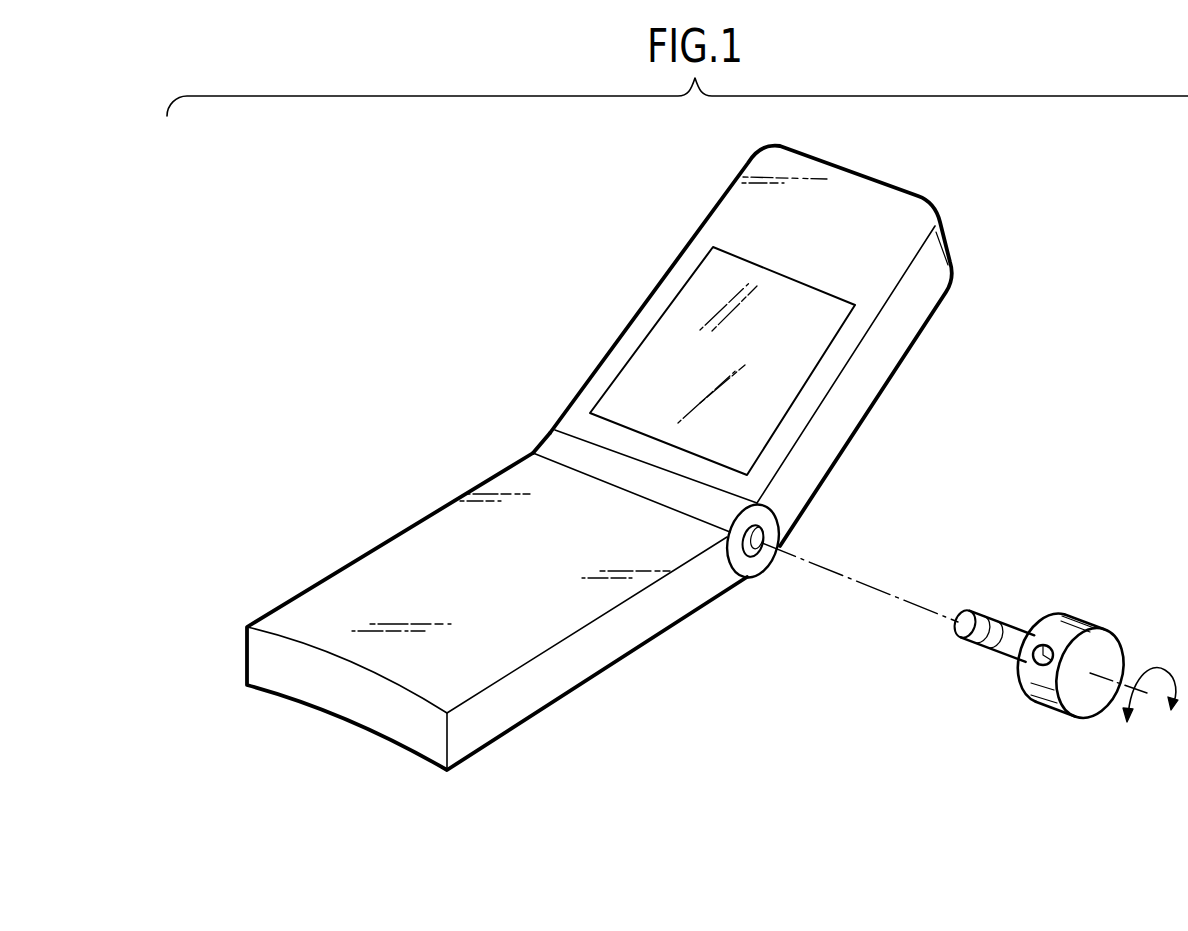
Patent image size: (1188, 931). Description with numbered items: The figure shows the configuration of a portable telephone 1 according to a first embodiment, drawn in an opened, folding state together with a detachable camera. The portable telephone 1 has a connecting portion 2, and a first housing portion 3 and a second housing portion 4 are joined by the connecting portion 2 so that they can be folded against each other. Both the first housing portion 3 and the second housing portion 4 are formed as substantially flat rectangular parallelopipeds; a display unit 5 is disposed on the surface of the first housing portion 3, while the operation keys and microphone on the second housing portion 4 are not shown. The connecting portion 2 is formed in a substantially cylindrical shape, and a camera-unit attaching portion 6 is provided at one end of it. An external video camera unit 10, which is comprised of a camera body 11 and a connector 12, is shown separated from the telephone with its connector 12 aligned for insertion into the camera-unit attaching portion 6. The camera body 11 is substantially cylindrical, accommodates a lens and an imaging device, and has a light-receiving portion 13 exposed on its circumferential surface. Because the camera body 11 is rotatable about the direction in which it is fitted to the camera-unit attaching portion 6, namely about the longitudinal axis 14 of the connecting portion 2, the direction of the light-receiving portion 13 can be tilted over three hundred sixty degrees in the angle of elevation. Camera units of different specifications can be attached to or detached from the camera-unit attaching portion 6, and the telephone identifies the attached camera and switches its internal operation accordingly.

The portable telephone 1 is at (599, 472).
The connecting portion 2 is at (550, 440).
The first housing portion 3 is at (751, 339).
The second housing portion 4 is at (527, 710).
The display unit 5 is at (663, 345).
The camera-unit attaching portion 6 is at (757, 551).
The external video camera unit 10 is at (1064, 670).
The camera body 11 is at (1093, 622).
The connector 12 is at (1000, 617).
The light-receiving portion 13 is at (1042, 644).
The longitudinal axis 14 is at (885, 592).